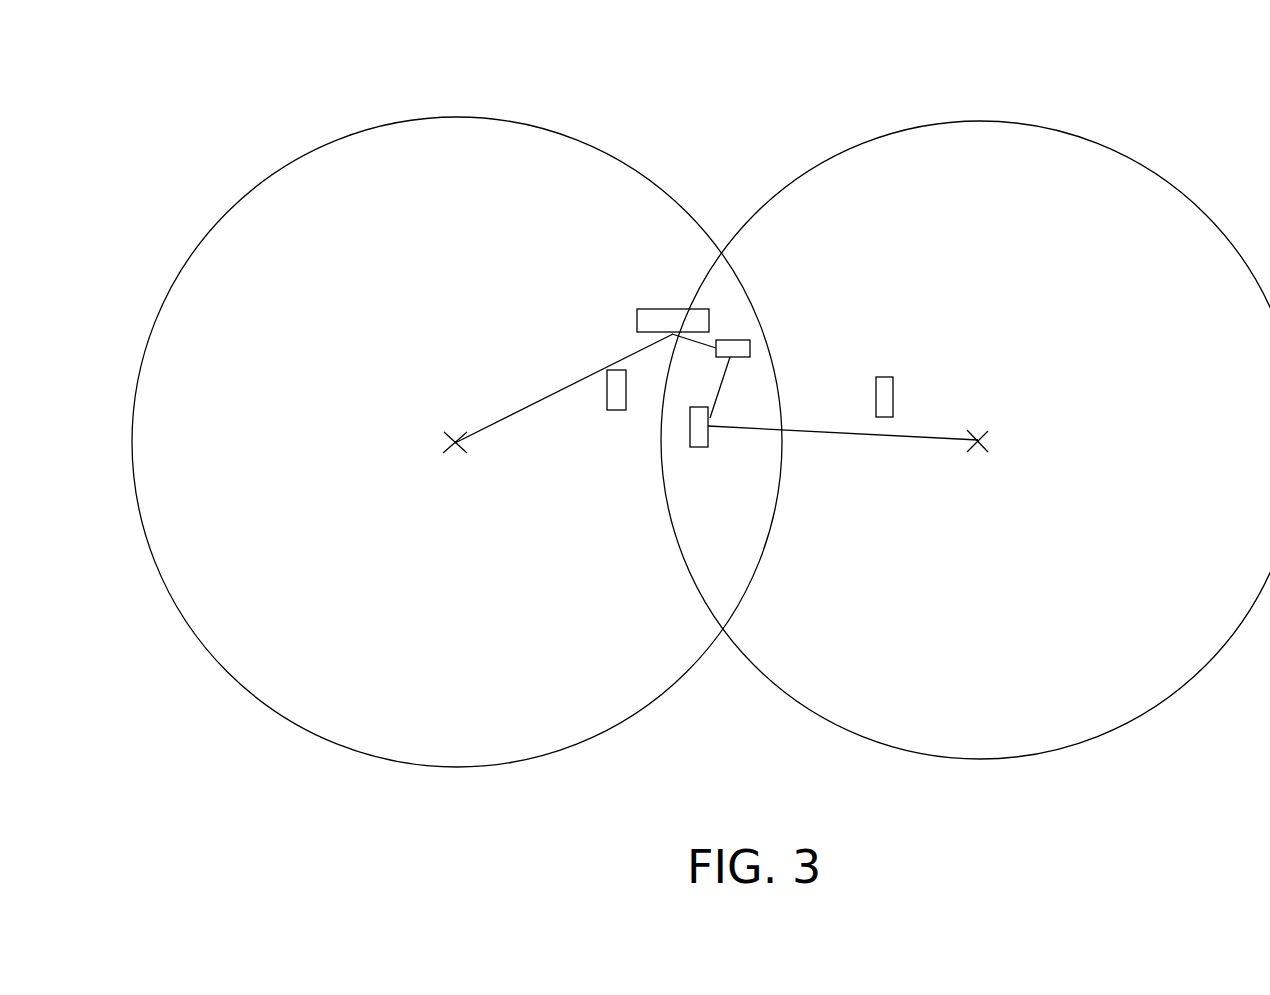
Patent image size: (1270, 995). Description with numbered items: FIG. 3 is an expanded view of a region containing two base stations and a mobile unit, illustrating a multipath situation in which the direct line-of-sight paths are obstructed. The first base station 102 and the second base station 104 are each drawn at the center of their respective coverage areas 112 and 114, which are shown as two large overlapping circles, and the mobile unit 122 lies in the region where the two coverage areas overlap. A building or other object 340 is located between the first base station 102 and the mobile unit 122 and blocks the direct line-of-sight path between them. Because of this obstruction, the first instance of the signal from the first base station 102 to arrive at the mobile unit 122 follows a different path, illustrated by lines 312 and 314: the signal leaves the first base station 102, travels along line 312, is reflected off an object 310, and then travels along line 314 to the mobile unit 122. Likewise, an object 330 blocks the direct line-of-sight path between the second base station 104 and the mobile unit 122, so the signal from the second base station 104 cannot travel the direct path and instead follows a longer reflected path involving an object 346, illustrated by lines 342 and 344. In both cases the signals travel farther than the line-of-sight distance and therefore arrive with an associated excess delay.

The coverage area 112 is at (457, 115).
The coverage area 114 is at (977, 120).
The first base station 102 is at (438, 443).
The second base station 104 is at (988, 440).
The object 310 is at (678, 309).
The line 312 is at (577, 381).
The line 314 is at (705, 342).
The mobile unit 122 is at (750, 348).
The line 344 is at (728, 370).
The object 346 is at (700, 447).
The line 342 is at (877, 438).
The building or other object 340 is at (615, 412).
The object 330 is at (893, 395).